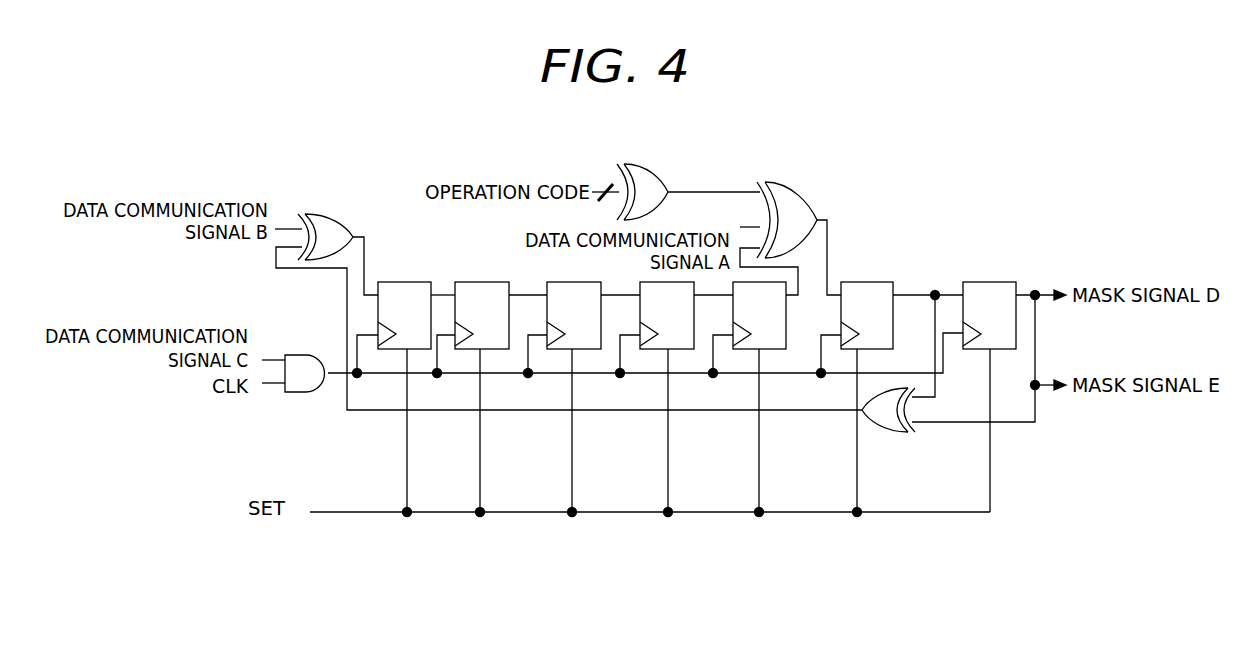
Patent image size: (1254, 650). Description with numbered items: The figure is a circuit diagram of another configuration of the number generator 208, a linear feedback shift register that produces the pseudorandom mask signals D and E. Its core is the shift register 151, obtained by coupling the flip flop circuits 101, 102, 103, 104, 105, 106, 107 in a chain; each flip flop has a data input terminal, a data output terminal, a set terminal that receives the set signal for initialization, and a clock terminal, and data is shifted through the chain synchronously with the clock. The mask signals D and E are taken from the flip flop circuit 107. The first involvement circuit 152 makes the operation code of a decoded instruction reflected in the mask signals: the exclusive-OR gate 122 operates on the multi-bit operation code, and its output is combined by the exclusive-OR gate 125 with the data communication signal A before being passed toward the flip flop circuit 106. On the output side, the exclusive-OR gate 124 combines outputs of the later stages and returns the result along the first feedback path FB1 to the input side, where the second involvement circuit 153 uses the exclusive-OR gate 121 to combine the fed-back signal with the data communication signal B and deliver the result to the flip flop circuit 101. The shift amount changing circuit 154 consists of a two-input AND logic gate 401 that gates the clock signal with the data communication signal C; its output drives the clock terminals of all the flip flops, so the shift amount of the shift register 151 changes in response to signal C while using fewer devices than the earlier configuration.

The flip flop circuit 101 is at (405, 282).
The flip flop circuit 102 is at (482, 282).
The flip flop circuit 103 is at (582, 350).
The flip flop circuit 104 is at (678, 350).
The flip flop circuit 105 is at (770, 350).
The flip flop circuit 106 is at (865, 282).
The flip flop circuit 107 is at (987, 282).
The exclusive-OR gate 121 is at (349, 221).
The exclusive-OR gate 122 is at (660, 172).
The exclusive-OR gate 124 is at (866, 430).
The exclusive-OR gate 125 is at (810, 198).
The shift register 151 is at (357, 310).
The first involvement circuit 152 is at (846, 205).
The second involvement circuit 153 is at (338, 208).
The shift amount changing circuit 154 is at (281, 410).
The number generator 208 is at (949, 532).
The logic gate 401 is at (296, 393).
The first feedback path FB1 is at (628, 412).